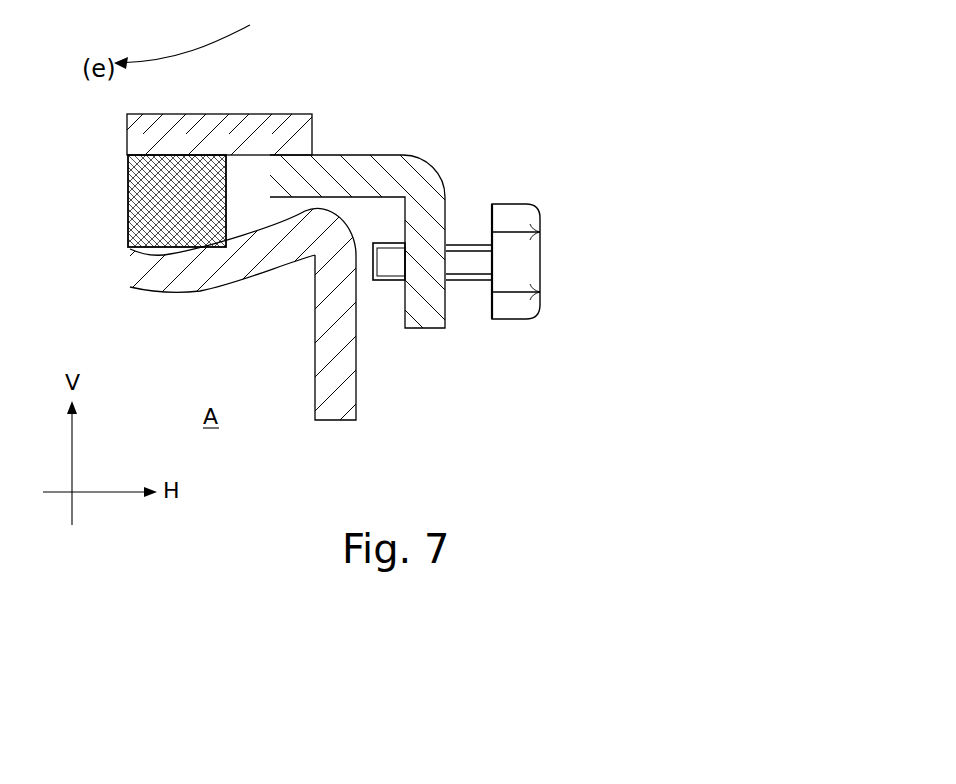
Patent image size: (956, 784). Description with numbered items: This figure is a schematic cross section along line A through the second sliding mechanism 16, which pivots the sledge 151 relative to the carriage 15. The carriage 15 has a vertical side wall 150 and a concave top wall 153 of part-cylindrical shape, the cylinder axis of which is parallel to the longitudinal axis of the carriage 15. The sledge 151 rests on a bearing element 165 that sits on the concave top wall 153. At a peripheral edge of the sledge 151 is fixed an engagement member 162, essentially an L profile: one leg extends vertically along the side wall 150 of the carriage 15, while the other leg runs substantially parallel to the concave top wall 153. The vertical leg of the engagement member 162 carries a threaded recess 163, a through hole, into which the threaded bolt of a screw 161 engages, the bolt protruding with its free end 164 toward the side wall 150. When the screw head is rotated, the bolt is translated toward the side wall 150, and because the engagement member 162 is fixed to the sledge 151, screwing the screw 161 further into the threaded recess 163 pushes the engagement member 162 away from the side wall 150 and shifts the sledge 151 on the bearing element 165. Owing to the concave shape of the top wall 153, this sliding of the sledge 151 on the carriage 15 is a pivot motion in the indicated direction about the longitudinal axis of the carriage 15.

The carriage 15 is at (255, 349).
The second sliding mechanism 16 is at (416, 220).
The side wall 150 is at (340, 395).
The sledge 151 is at (272, 124).
The concave top wall 153 is at (177, 287).
The screw 161 is at (528, 268).
The engagement member 162 is at (424, 176).
The threaded recess 163 is at (448, 281).
The bolt head 164 is at (388, 268).
The bearing element 165 is at (128, 214).